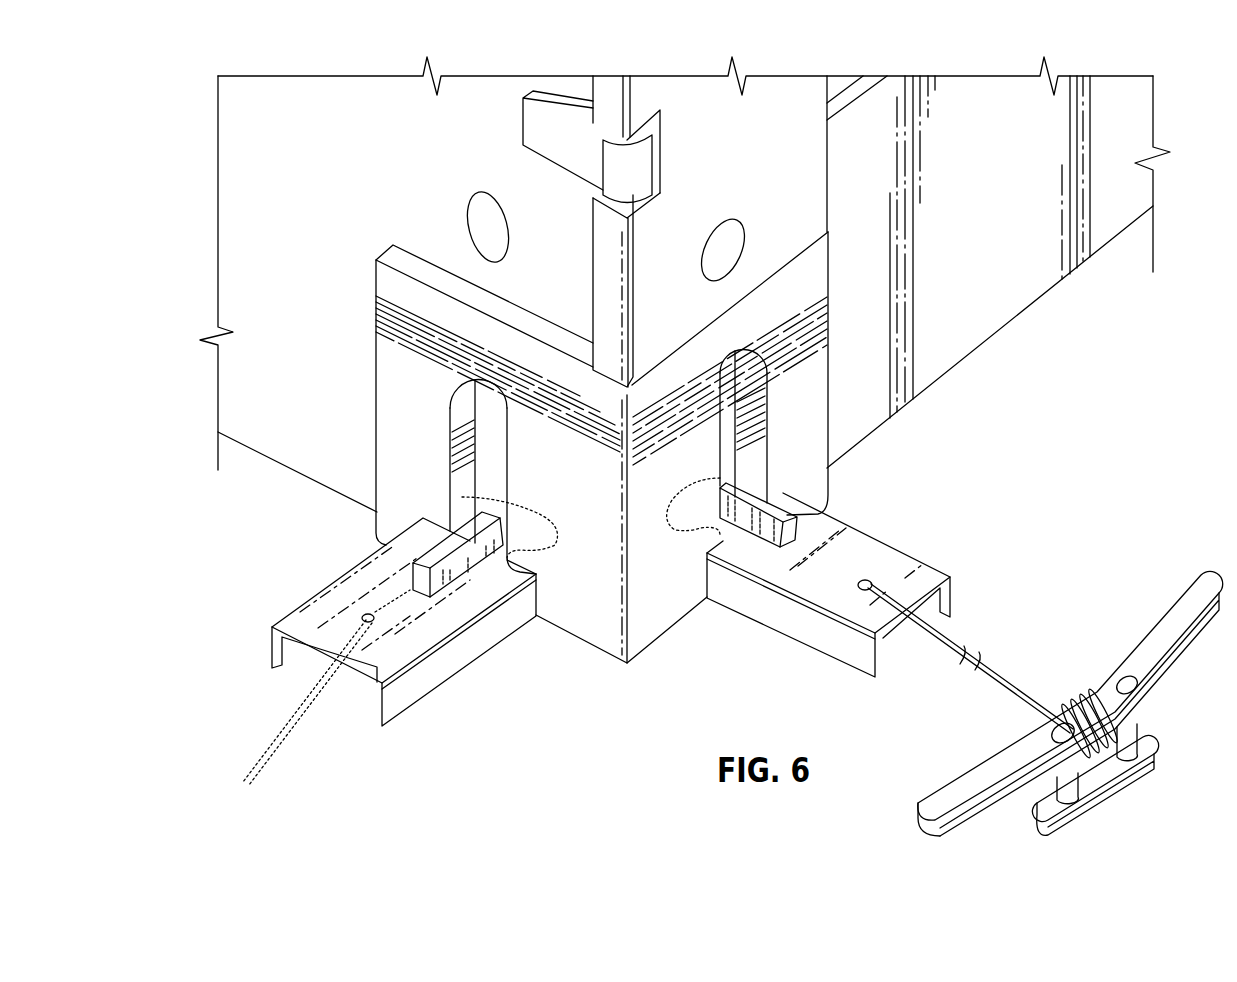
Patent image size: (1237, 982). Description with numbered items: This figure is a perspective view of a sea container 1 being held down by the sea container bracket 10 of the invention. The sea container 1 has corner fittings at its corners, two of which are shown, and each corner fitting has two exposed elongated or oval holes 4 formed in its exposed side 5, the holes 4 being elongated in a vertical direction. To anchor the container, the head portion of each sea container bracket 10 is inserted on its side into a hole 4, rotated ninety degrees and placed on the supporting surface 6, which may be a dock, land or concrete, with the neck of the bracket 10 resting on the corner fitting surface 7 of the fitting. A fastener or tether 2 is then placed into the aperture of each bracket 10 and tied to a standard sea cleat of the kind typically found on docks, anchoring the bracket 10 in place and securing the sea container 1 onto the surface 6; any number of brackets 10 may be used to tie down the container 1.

The sea container 1 is at (772, 185).
The fastening device 2 is at (1010, 684).
The oval hole 4 is at (450, 482).
The exposed side 5 is at (392, 292).
The supporting surface 6 is at (551, 726).
The corner fitting surface 7 is at (460, 413).
The sea container bracket 10 is at (935, 534).